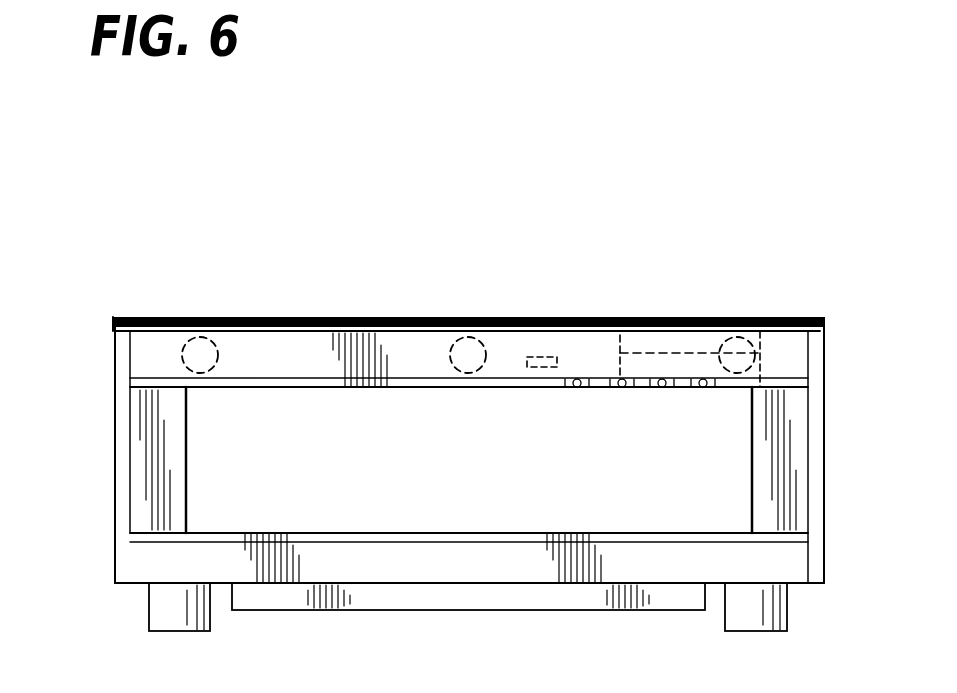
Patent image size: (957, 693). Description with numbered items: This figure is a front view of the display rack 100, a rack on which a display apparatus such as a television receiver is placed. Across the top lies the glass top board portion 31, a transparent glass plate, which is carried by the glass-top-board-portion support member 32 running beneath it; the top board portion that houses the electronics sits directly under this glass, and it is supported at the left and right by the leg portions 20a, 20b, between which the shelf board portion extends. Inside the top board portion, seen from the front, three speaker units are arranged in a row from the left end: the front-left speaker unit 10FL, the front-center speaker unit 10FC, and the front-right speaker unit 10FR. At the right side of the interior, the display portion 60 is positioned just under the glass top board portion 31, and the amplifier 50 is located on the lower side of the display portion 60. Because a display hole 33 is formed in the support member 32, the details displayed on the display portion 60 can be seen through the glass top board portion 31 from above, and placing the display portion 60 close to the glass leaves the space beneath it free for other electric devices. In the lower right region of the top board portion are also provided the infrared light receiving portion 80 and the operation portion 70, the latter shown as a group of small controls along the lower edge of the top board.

The display rack 100 is at (187, 153).
The leg portion 20a is at (113, 461).
The leg portion 20b is at (825, 468).
The glass top board portion 31 is at (200, 317).
The glass-top-board-portion support member 32 is at (117, 330).
The display hole 33 is at (750, 330).
The front-left speaker unit 10FL is at (205, 373).
The front-center speaker unit 10FC is at (470, 373).
The front-right speaker unit 10FR is at (736, 375).
The amplifier 50 is at (619, 335).
The display portion 60 is at (670, 338).
The operation portion 70 is at (712, 393).
The infrared light receiving portion 80 is at (545, 368).